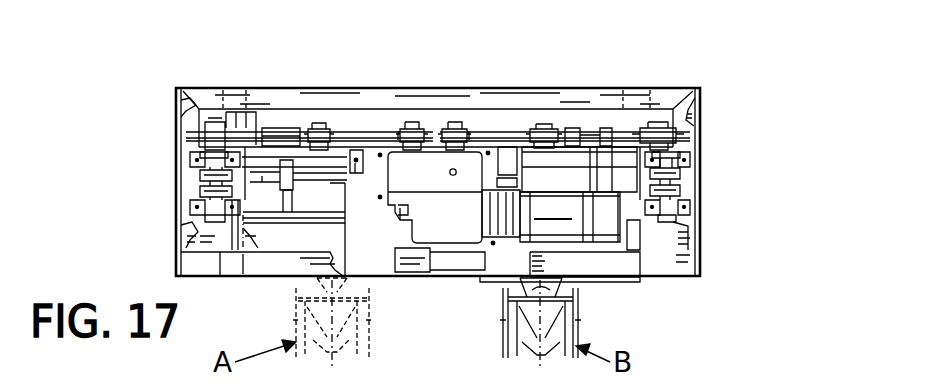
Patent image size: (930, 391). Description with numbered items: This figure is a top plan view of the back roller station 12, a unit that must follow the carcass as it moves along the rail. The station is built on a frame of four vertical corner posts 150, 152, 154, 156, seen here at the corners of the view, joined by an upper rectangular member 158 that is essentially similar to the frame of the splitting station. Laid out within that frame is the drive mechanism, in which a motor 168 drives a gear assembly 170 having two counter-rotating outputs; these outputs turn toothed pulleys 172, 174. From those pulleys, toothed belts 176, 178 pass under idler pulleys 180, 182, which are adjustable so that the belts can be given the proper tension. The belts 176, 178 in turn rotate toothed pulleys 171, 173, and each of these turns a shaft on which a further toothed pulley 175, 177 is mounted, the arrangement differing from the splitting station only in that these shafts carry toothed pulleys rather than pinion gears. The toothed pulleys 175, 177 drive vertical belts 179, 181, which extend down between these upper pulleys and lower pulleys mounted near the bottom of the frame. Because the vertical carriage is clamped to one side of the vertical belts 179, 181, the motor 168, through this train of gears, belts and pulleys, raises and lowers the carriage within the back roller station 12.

The back roller station 12 is at (710, 257).
The vertical corner post 150 is at (178, 258).
The vertical corner post 152 is at (686, 272).
The vertical corner post 154 is at (694, 107).
The vertical corner post 156 is at (178, 102).
The upper rectangular member 158 is at (272, 262).
The motor 168 is at (561, 198).
The gear assembly 170 is at (434, 202).
The toothed pulley 171 is at (696, 147).
The toothed pulley 172 is at (426, 130).
The toothed pulley 173 is at (190, 142).
The toothed pulley 174 is at (468, 131).
The toothed pulley 175 is at (684, 173).
The toothed belt 176 is at (286, 134).
The toothed pulley 177 is at (200, 175).
The toothed belt 178 is at (578, 134).
The vertical belt 179 is at (200, 191).
The idler pulley 180 is at (316, 128).
The vertical belt 181 is at (688, 194).
The idler pulley 182 is at (539, 130).